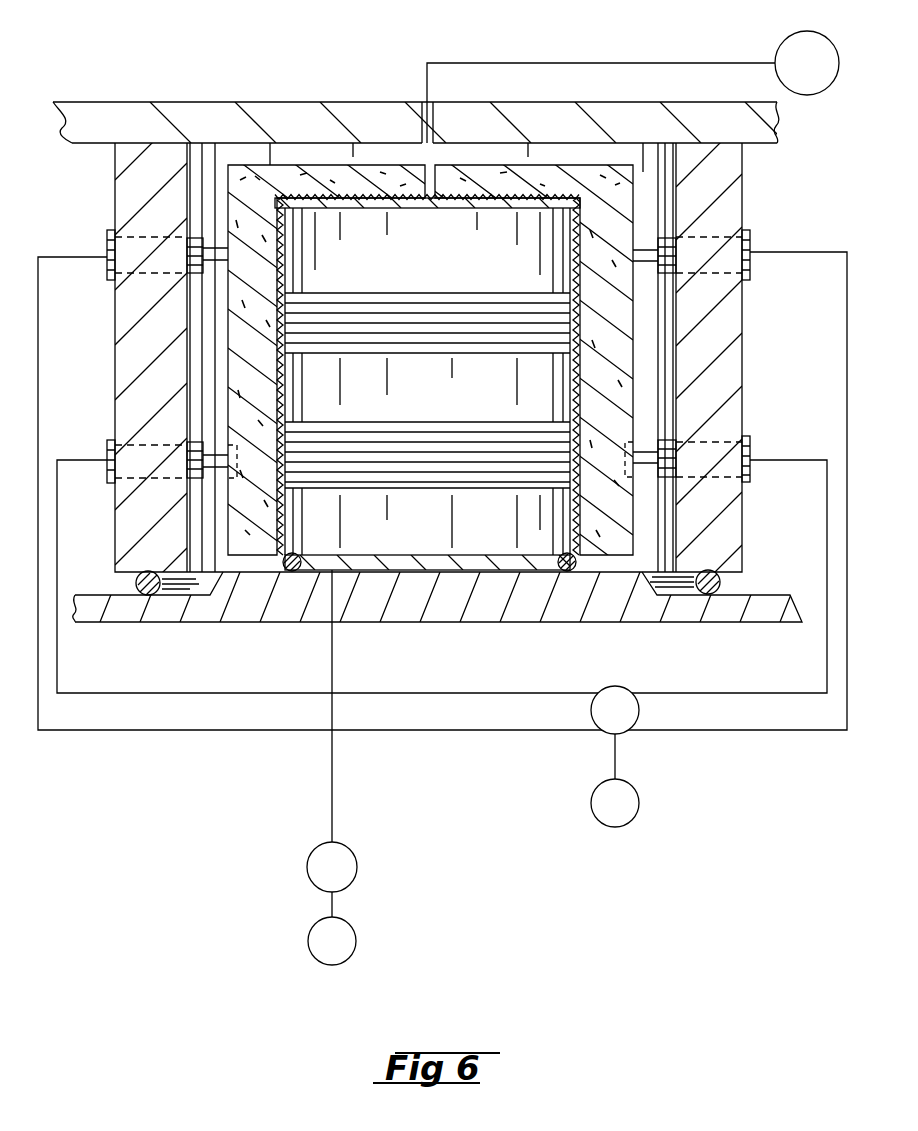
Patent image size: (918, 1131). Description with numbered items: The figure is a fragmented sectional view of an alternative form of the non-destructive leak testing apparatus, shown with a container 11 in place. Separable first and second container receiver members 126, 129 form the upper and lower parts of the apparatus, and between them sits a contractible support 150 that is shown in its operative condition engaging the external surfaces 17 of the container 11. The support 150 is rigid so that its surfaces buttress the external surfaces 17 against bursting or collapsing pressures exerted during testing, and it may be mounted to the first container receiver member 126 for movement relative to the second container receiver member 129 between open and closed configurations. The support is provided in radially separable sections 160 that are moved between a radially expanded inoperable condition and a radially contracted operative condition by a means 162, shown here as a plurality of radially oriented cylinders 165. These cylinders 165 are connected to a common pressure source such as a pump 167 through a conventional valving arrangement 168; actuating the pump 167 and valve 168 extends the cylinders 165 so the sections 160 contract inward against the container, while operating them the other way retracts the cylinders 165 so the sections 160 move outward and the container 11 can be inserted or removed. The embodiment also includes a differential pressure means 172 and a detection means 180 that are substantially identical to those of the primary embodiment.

The container 11 is at (430, 383).
The external surfaces of the container 17 is at (290, 378).
The first container receiver member 126 is at (368, 100).
The second container receiver member 129 is at (465, 624).
The contractible support 150 is at (640, 385).
The radially separable support sections 160 is at (572, 378).
The means for moving support sections 162 is at (110, 232).
The radially oriented cylinders 165 is at (200, 282).
The pump 167 is at (640, 795).
The valving arrangement 168 is at (625, 688).
The differential pressure means 172 is at (357, 901).
The detection means 180 is at (776, 43).